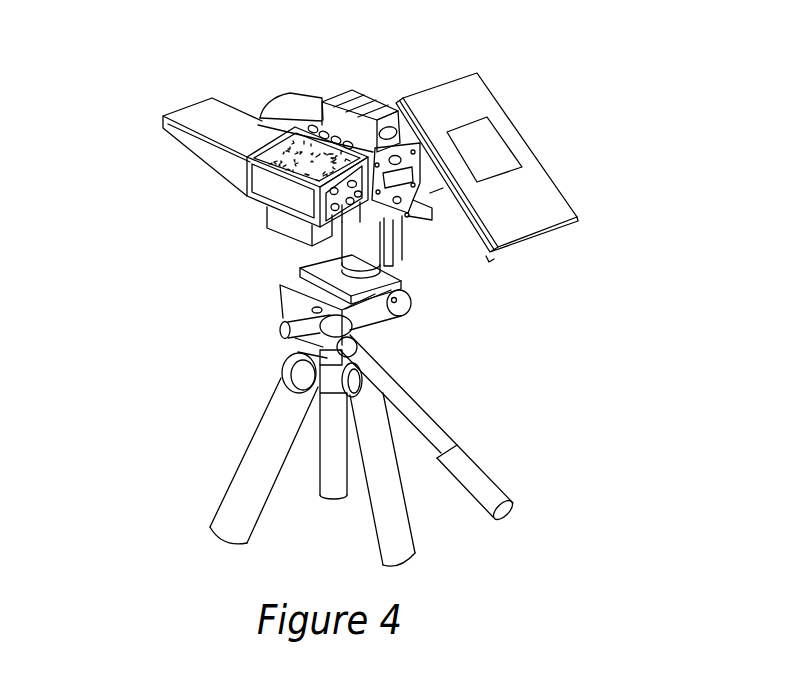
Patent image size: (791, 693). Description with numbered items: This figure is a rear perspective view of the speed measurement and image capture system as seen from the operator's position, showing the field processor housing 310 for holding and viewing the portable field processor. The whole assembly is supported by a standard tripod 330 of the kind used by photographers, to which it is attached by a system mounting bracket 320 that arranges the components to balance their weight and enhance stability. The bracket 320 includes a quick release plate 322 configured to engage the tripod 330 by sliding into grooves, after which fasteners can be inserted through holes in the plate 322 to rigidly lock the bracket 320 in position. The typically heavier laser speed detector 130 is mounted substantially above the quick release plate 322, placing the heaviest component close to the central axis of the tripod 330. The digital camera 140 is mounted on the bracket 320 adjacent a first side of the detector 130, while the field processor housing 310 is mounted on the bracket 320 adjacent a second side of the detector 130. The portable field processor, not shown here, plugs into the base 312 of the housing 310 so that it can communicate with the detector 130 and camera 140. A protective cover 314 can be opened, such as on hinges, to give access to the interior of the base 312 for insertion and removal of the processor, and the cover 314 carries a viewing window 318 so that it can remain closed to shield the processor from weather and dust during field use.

The laser speed detector 130 is at (300, 93).
The digital camera 140 is at (247, 196).
The field processor housing 310 is at (543, 186).
The base 312 is at (486, 256).
The protective cover 314 is at (486, 85).
The viewing window 318 is at (494, 127).
The system mounting bracket 320 is at (430, 247).
The quick release plate 322 is at (300, 268).
The tripod 330 is at (250, 375).